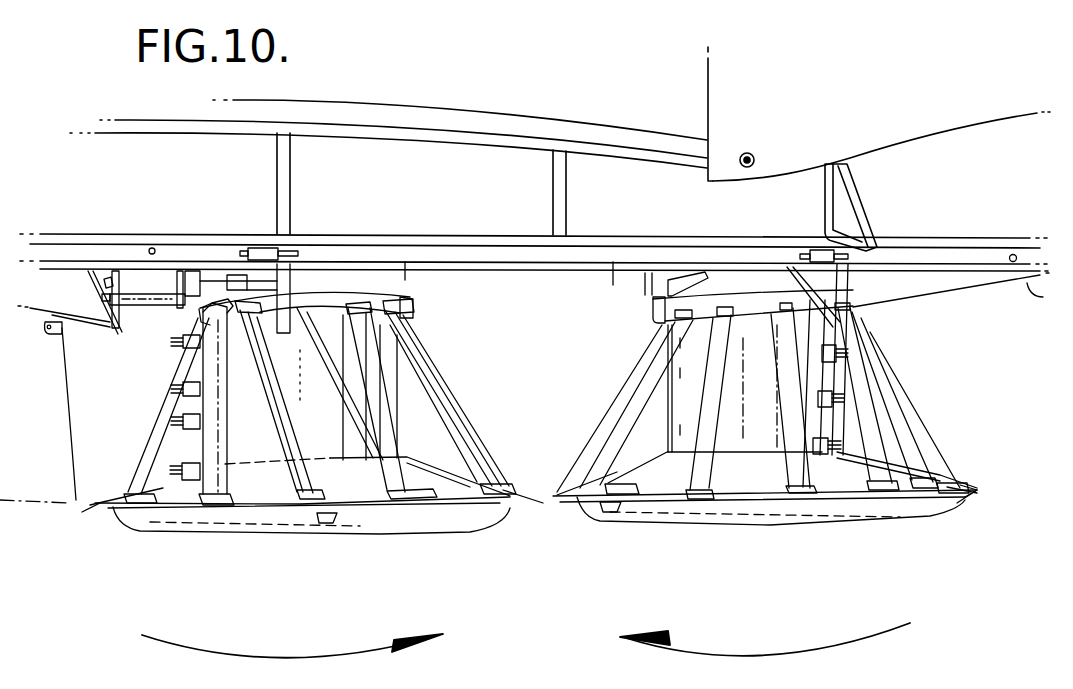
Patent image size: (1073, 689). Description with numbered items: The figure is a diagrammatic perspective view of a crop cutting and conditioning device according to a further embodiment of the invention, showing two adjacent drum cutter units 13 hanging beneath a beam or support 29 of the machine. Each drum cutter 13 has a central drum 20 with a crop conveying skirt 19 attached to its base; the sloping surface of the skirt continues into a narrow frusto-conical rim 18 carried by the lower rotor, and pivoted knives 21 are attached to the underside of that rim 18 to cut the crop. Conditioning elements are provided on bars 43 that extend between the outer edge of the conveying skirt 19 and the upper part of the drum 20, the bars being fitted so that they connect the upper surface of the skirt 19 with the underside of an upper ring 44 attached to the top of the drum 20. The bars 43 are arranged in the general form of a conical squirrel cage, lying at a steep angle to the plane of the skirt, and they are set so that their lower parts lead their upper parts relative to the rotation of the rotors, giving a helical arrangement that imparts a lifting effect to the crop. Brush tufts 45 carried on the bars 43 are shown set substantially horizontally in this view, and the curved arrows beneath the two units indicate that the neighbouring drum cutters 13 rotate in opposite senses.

The drum cutter 13 is at (500, 365).
The frusto-conical rim 18 is at (453, 497).
The crop conveying skirt 19 is at (247, 488).
The central drum 20 is at (333, 423).
The pivoted knives 21 is at (328, 523).
The support beam 29 is at (384, 254).
The bars 43 is at (212, 446).
The upper ring 44 is at (220, 308).
The brush tufts 45 is at (183, 337).